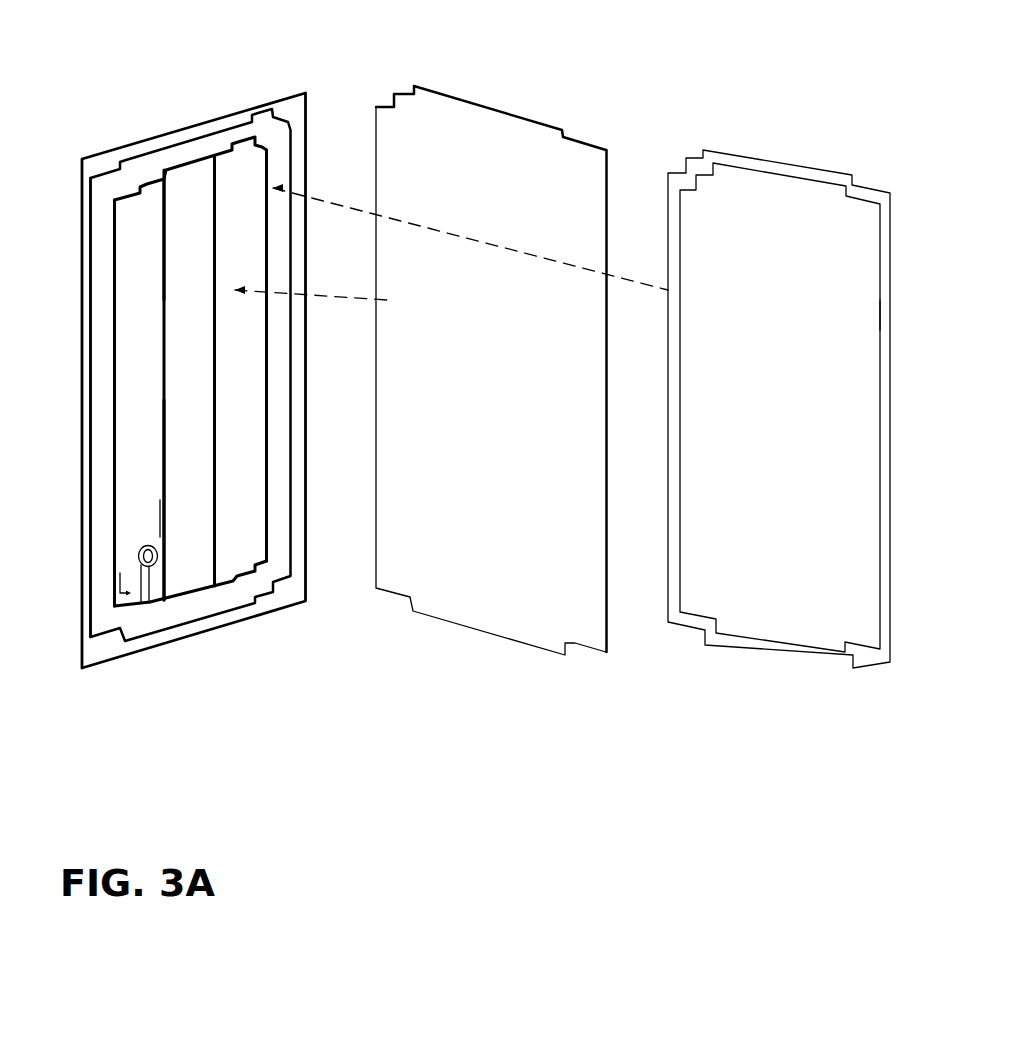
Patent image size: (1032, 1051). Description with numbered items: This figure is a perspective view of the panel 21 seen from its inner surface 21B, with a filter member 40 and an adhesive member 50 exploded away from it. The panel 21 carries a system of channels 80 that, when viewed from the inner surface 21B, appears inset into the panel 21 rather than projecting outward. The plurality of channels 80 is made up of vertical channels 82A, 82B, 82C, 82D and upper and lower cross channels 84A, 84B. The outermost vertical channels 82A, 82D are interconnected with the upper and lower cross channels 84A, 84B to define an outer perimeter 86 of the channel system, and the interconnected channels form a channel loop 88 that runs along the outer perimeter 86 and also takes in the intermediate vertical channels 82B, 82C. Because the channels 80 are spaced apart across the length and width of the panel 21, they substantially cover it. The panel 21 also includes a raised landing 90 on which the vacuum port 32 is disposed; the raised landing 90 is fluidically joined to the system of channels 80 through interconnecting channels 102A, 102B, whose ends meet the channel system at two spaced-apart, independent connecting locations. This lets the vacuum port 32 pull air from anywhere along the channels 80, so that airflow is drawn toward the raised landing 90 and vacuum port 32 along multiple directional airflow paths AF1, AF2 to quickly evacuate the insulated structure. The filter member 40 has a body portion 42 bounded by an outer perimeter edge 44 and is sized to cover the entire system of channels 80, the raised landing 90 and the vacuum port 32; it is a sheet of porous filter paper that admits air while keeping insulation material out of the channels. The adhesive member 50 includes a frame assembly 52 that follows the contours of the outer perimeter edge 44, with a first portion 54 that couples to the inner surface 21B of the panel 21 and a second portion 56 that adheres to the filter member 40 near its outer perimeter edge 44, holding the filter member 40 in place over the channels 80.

The panel 21 is at (342, 391).
The inner surface 21B is at (237, 125).
The plurality of channels 80 is at (105, 488).
The vertical channel 82A is at (113, 303).
The vertical channel 82B is at (165, 243).
The vertical channel 82C is at (212, 200).
The vertical channel 82D is at (263, 222).
The upper cross channel 84A is at (166, 168).
The lower cross channel 84B is at (166, 604).
The outer perimeter 86 is at (113, 345).
The channel loop 88 is at (104, 396).
The raised landing 90 is at (139, 552).
The vacuum port 32 is at (138, 561).
The interconnecting channel 102A is at (147, 588).
The interconnecting channel 102B is at (157, 560).
The airflow path AF1 is at (118, 592).
The airflow path AF2 is at (180, 548).
The filter member 40 is at (493, 341).
The body portion 42 is at (490, 147).
The outer perimeter edge 44 is at (462, 98).
The adhesive member 50 is at (802, 372).
The frame assembly 52 is at (886, 248).
The first portion 54 is at (892, 306).
The second portion 56 is at (874, 318).